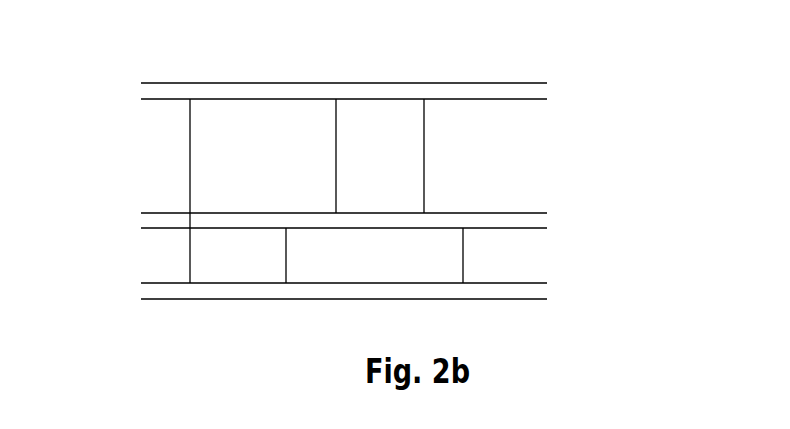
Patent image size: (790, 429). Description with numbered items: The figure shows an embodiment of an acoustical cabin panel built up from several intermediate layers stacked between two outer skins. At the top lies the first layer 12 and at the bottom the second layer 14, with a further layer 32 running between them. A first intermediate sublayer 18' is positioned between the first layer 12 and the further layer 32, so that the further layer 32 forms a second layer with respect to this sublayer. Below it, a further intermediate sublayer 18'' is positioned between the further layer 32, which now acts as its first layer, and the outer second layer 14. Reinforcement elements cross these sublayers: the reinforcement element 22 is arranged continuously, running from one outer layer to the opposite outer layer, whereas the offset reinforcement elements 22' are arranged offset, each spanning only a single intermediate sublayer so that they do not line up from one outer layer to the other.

The first layer 12 is at (535, 93).
The second layer 14 is at (533, 291).
The further layer 32 is at (535, 222).
The first intermediate sublayer 18' is at (421, 155).
The further intermediate sublayer 18'' is at (415, 256).
The reinforcement element 22 is at (239, 158).
The offset reinforcement element 22' is at (322, 203).